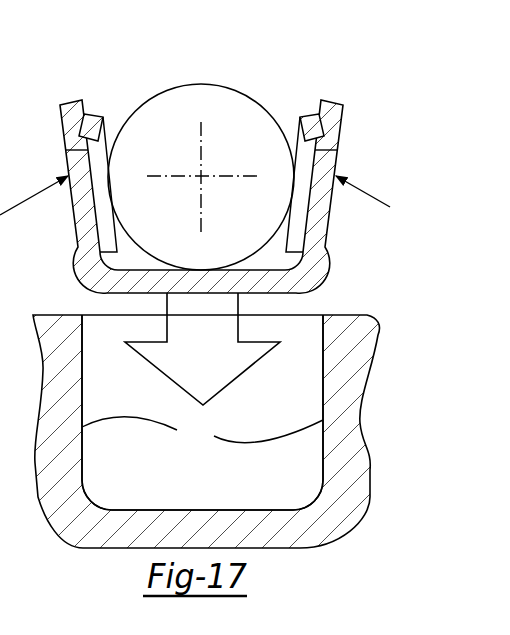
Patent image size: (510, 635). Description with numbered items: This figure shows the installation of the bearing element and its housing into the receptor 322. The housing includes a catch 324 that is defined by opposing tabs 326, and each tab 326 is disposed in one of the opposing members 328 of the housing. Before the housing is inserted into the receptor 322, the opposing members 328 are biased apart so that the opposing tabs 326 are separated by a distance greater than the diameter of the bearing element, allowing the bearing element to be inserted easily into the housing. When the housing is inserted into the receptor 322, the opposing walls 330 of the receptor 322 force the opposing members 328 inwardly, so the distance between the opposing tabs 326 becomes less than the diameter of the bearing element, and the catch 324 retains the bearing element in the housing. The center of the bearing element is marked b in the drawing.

The receptor 322 is at (213, 483).
The catch 324 is at (298, 107).
The opposing tabs 326 is at (103, 117).
The opposing members 328 is at (190, 427).
The opposing walls 330 is at (202, 430).
The ball center axis b is at (203, 176).